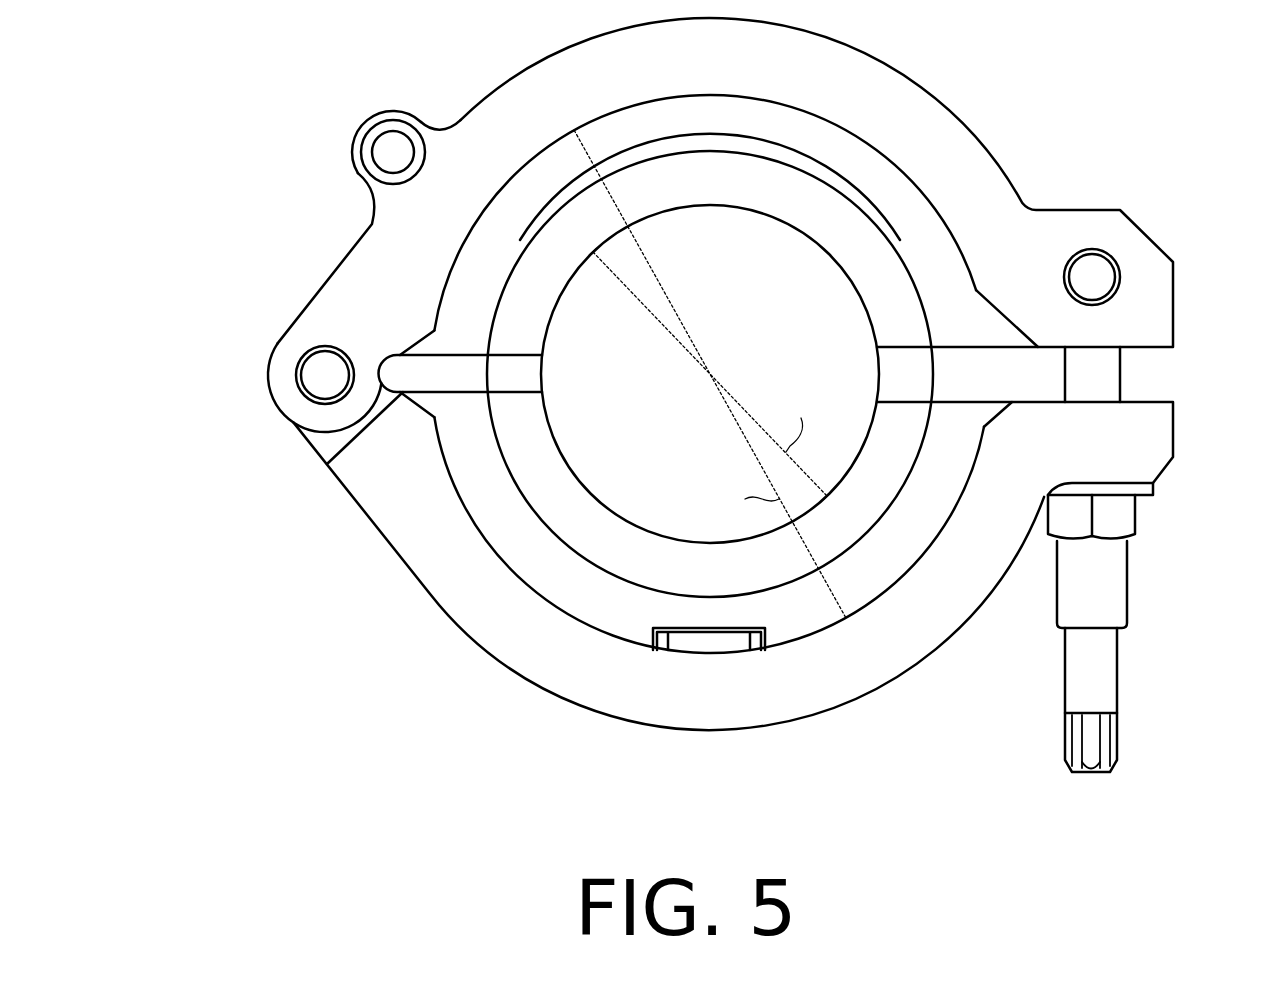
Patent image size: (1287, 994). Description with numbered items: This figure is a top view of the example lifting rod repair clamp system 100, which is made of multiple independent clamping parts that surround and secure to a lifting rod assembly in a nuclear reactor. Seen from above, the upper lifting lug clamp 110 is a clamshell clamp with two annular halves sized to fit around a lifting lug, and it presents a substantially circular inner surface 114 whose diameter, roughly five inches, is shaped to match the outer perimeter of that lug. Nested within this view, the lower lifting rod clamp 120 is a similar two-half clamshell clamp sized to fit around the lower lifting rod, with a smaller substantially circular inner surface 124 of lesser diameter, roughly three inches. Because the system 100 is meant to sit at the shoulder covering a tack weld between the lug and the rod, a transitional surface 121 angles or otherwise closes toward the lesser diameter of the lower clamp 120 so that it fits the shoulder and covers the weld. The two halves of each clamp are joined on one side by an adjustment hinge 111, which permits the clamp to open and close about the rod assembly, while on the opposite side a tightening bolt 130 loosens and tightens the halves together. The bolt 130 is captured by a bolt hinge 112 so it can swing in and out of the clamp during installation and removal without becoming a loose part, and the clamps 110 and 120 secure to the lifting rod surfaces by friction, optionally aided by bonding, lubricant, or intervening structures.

The lifting rod repair clamp system 100 is at (357, 684).
The upper lifting lug clamp 110 is at (495, 123).
The adjustment hinge 111 is at (325, 377).
The bolt hinge 112 is at (1097, 282).
The inner surface 114 is at (530, 588).
The lower lifting rod clamp 120 is at (848, 575).
The transitional surface 121 is at (850, 237).
The inner surface 124 is at (630, 522).
The tightening bolts 130 is at (1095, 738).